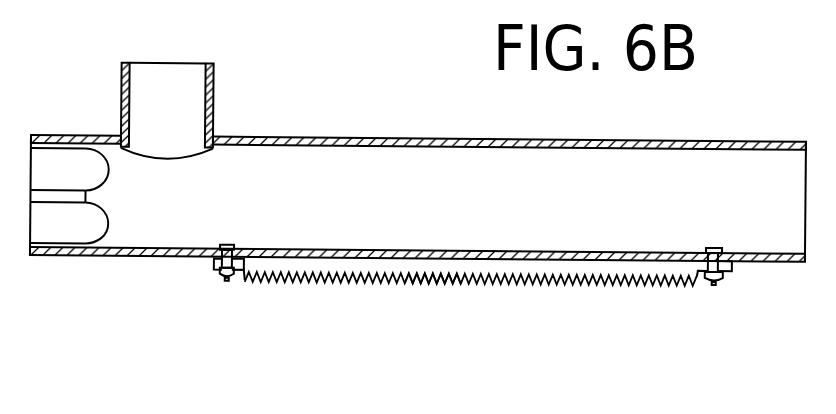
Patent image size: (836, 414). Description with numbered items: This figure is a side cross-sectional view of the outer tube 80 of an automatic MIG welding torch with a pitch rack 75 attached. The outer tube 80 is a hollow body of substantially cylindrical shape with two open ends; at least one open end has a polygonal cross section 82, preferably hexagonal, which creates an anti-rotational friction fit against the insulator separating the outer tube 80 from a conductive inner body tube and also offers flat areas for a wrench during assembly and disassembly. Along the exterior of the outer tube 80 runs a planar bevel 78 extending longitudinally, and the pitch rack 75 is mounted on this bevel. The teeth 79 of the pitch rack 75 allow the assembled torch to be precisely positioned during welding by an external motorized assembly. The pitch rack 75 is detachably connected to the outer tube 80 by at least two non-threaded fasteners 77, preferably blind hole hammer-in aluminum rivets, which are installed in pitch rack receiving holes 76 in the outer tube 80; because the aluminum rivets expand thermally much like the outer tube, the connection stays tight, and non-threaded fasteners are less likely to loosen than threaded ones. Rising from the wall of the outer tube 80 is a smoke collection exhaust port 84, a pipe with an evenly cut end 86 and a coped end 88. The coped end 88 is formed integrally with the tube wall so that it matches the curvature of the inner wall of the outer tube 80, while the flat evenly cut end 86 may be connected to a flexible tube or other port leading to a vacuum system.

The pitch rack 75 is at (316, 271).
The pitch rack receiving holes 76 is at (238, 250).
The non-threaded fasteners 77 is at (225, 246).
The planar bevel 78 is at (535, 261).
The teeth 79 is at (432, 282).
The outer tube 80 is at (428, 134).
The polygonal cross section 82 is at (46, 163).
The smoke collection exhaust port 84 is at (218, 99).
The evenly cut end 86 is at (192, 63).
The coped end 88 is at (193, 152).